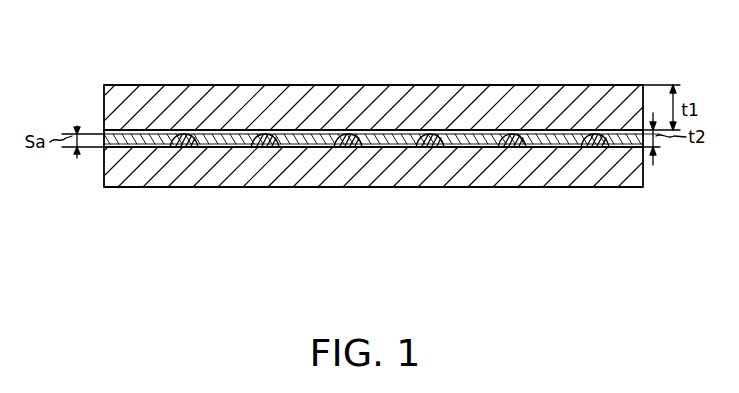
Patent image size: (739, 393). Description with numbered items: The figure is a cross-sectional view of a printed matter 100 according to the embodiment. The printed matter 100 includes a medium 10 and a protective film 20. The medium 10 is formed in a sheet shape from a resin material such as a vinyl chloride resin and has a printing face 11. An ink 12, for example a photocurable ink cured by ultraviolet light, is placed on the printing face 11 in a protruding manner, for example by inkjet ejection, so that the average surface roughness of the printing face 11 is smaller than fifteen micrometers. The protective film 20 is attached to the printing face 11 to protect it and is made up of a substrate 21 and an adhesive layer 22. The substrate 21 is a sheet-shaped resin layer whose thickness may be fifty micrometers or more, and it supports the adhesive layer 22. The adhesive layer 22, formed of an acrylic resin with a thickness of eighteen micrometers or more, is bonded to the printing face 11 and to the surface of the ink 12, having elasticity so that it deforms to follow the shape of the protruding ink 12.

The printed matter 100 is at (545, 63).
The protective film 20 is at (324, 42).
The substrate 21 is at (335, 94).
The adhesive layer 22 is at (372, 132).
The medium 10 is at (632, 188).
The printing face 11 is at (563, 148).
The ink 12 is at (185, 148).